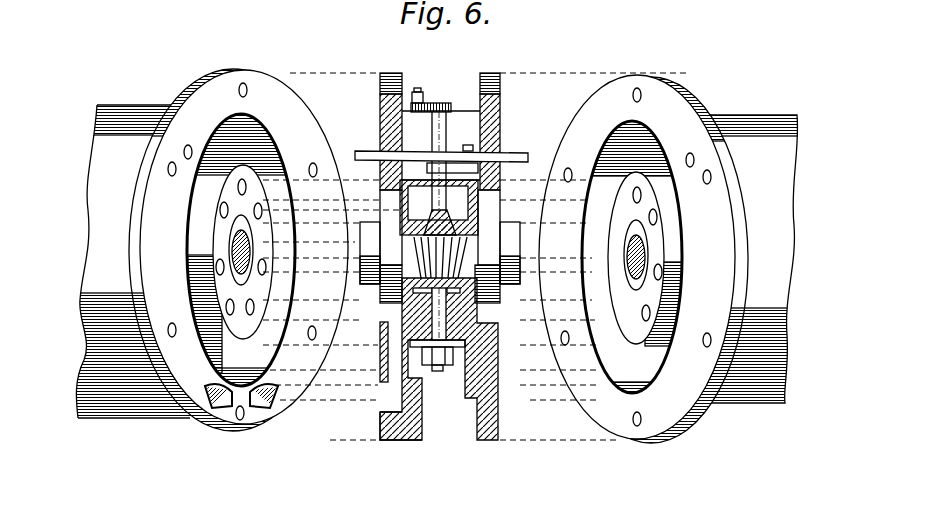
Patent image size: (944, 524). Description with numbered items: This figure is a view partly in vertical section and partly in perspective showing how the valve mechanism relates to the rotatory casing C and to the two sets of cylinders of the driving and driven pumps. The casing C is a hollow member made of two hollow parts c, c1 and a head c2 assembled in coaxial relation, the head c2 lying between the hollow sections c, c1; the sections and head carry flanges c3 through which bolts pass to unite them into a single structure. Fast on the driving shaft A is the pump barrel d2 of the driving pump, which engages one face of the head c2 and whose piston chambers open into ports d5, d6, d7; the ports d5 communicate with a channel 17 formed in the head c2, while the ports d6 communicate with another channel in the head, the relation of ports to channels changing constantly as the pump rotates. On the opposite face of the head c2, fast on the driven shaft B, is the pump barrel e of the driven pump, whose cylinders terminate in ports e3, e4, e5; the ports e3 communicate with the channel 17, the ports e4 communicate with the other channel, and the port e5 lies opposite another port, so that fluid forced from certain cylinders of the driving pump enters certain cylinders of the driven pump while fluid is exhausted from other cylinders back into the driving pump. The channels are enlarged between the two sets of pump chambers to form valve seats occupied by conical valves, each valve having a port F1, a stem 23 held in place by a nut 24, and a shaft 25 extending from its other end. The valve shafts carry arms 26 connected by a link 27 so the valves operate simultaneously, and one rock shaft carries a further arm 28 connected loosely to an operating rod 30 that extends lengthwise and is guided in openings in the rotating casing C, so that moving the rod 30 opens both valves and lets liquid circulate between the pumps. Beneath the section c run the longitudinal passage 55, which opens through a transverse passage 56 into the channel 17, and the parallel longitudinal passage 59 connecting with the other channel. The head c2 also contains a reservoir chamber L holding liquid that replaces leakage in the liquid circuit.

The driving shaft A is at (236, 243).
The driven shaft B is at (648, 247).
The casing C is at (562, 249).
The reservoir chamber L is at (465, 113).
The hollow casing section c is at (110, 107).
The hollow casing section c1 is at (760, 118).
The head c2 is at (473, 397).
The flanges c3 is at (267, 88).
The pump barrel d2 is at (214, 168).
The ports d5 is at (219, 210).
The ports d6 is at (262, 212).
The ports d7 is at (245, 183).
The pump barrel e is at (683, 251).
The ports e3 is at (659, 217).
The ports e4 is at (617, 212).
The port e5 is at (640, 194).
The valve port F1 is at (430, 247).
The channel 17 is at (388, 205).
The valve stem 23 is at (452, 323).
The nut 24 is at (452, 355).
The valve shaft 25 is at (498, 122).
The arms 26 is at (440, 106).
The link 27 is at (430, 100).
The arm 28 is at (456, 166).
The operating rod 30 is at (512, 158).
The longitudinal passage 55 is at (221, 402).
The transverse passage 56 is at (395, 380).
The longitudinal passage 59 is at (262, 404).